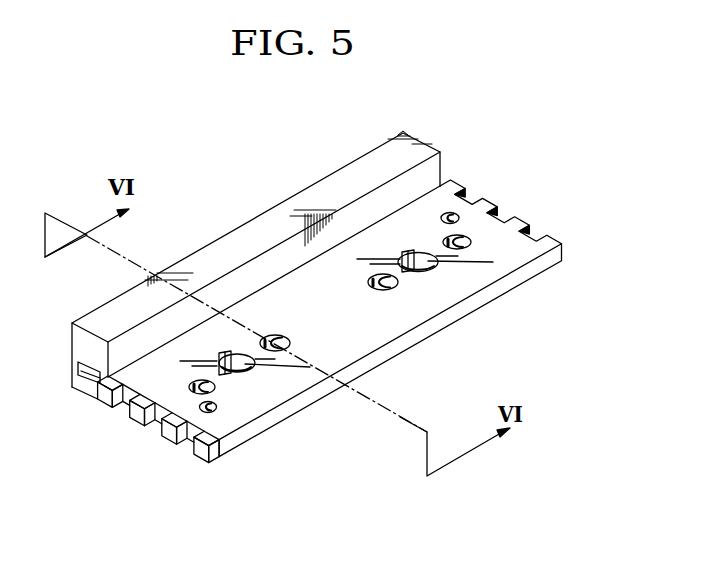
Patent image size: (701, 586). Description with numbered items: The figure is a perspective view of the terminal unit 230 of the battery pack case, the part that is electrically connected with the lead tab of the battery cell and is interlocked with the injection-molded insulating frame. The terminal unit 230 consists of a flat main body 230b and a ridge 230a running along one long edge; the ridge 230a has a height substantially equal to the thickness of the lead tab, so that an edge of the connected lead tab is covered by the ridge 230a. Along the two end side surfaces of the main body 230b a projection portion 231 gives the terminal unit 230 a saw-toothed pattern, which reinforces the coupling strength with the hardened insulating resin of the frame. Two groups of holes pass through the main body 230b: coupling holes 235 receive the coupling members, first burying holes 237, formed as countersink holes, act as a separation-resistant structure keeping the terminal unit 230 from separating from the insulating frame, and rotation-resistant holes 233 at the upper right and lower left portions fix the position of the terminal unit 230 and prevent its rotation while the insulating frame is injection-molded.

The terminal unit 230 is at (225, 210).
The ridge 230a is at (352, 174).
The main body 230b is at (328, 296).
The projection portion 231 is at (169, 438).
The rotation-resistant hole 233 is at (452, 214).
The coupling hole 235 is at (445, 258).
The first burying hole 237 is at (473, 238).